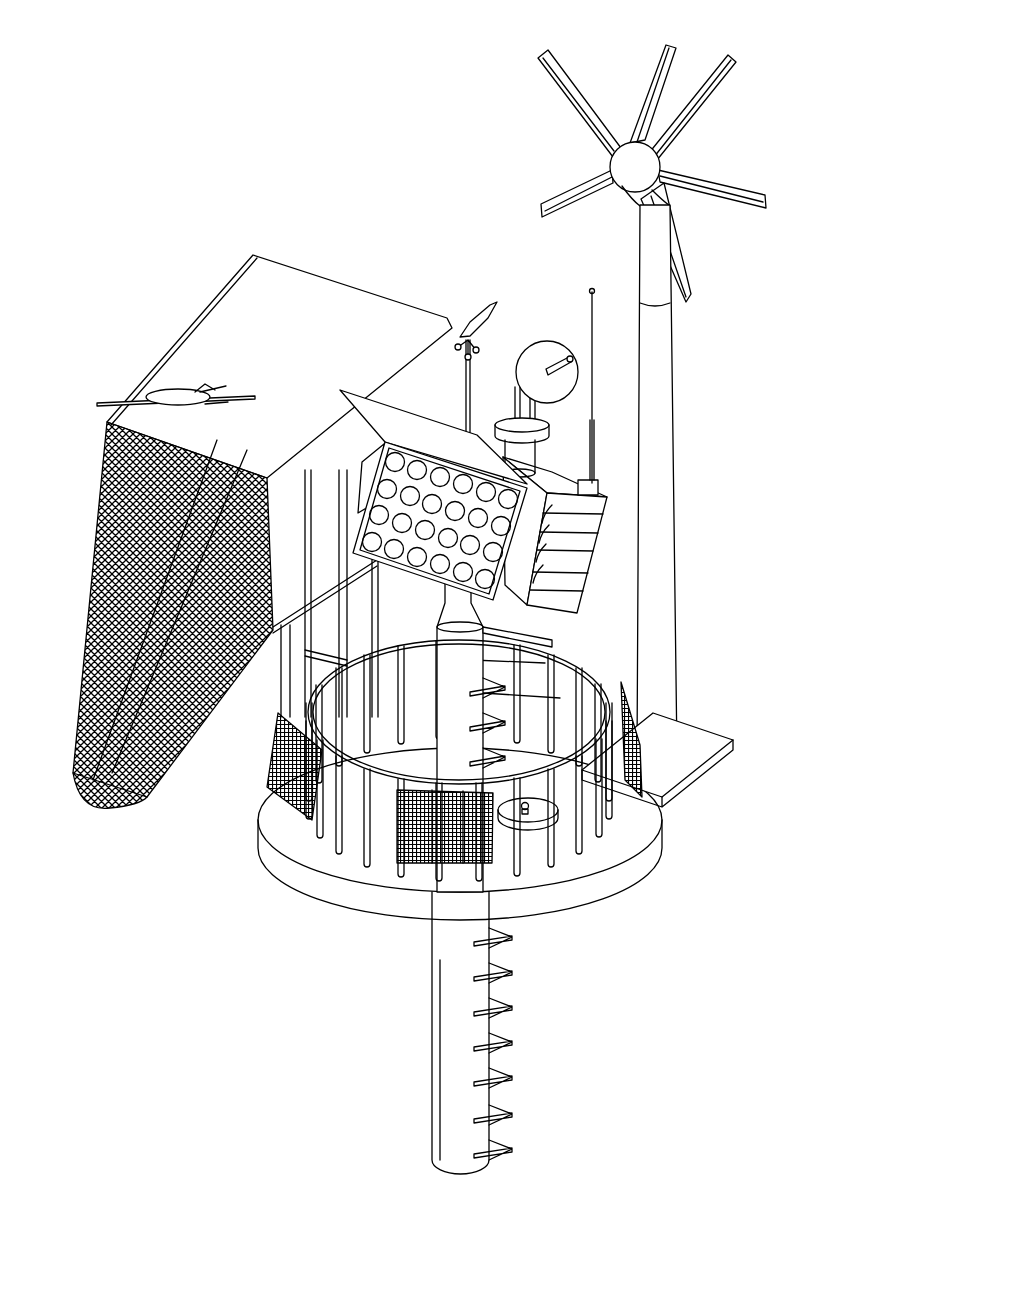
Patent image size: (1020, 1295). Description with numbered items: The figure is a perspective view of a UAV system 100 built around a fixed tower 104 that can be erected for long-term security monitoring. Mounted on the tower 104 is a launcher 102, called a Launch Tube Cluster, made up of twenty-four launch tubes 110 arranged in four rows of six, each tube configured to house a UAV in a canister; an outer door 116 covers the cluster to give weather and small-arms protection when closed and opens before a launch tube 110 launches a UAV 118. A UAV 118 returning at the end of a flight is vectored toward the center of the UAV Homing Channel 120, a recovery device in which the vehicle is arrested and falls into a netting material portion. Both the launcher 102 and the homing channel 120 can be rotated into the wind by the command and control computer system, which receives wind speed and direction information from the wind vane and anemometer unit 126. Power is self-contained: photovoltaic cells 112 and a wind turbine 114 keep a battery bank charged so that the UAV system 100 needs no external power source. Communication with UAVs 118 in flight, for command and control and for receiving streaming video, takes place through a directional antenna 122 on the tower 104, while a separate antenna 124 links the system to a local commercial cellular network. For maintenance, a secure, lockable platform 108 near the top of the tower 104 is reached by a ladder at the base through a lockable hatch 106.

The UAV system 100 is at (148, 182).
The launcher 102 is at (587, 563).
The tower 104 is at (472, 661).
The lockable hatch 106 is at (548, 817).
The platform 108 is at (590, 878).
The launch tubes 110 is at (643, 535).
The photovoltaic cells 112 is at (282, 813).
The wind turbine 114 is at (697, 123).
The outer door 116 is at (392, 398).
The UAV 118 is at (152, 387).
The UAV Homing Channel 120 is at (298, 266).
The directional antenna 122 is at (543, 335).
The antenna 124 is at (600, 358).
The wind vane and anemometer unit 126 is at (470, 330).